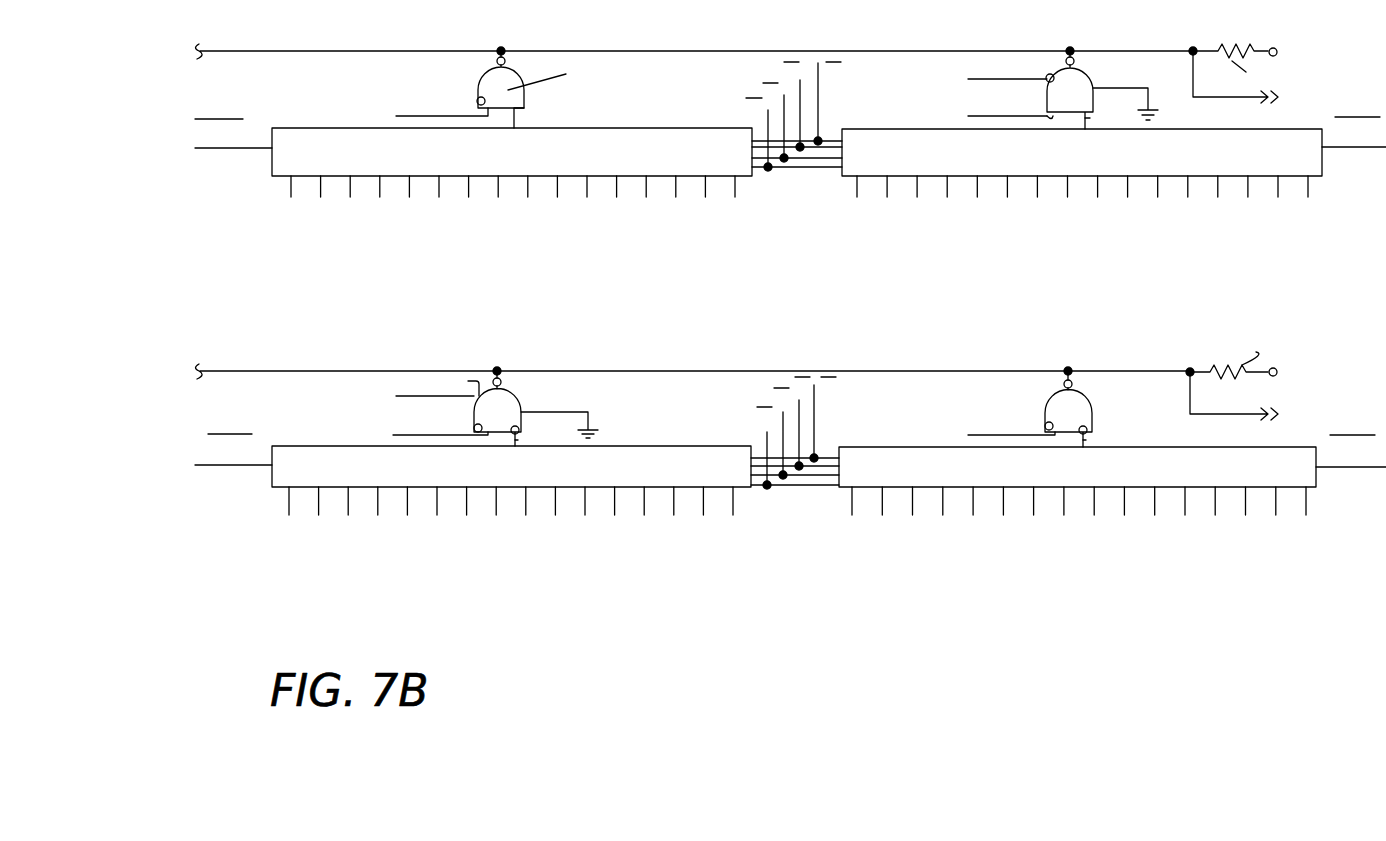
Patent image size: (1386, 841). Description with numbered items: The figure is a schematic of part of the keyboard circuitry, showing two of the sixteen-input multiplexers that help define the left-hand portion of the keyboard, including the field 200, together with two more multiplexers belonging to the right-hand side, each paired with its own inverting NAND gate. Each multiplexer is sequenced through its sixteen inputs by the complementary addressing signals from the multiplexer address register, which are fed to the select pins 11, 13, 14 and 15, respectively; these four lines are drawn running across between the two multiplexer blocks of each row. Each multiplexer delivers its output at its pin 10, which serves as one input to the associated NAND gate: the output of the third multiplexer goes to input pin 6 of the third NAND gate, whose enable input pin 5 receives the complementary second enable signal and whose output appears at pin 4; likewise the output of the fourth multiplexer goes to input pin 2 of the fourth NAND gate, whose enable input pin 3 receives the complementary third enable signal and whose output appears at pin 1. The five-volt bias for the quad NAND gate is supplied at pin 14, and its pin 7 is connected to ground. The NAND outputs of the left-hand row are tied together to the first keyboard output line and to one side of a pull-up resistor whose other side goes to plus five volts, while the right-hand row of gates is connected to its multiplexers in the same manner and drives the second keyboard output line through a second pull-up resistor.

The field 200 is at (696, 305).
The output pin of NAND4 1 is at (1075, 62).
The input pin of NAND4 2 is at (1090, 118).
The enable input pin of NAND4 3 is at (1045, 420).
The output pin of NAND3 4 is at (505, 62).
The enable input pin of NAND3 5 is at (477, 98).
The input pin of NAND3 6 is at (524, 110).
The ground pin of quad NAND gate 7 is at (1103, 90).
The multiplexer output pin 10 is at (524, 446).
The multiplexer select pin 11 is at (835, 168).
The multiplexer select pin 13 is at (833, 159).
The multiplexer select pin 14 is at (838, 146).
The multiplexer select pin 15 is at (836, 140).